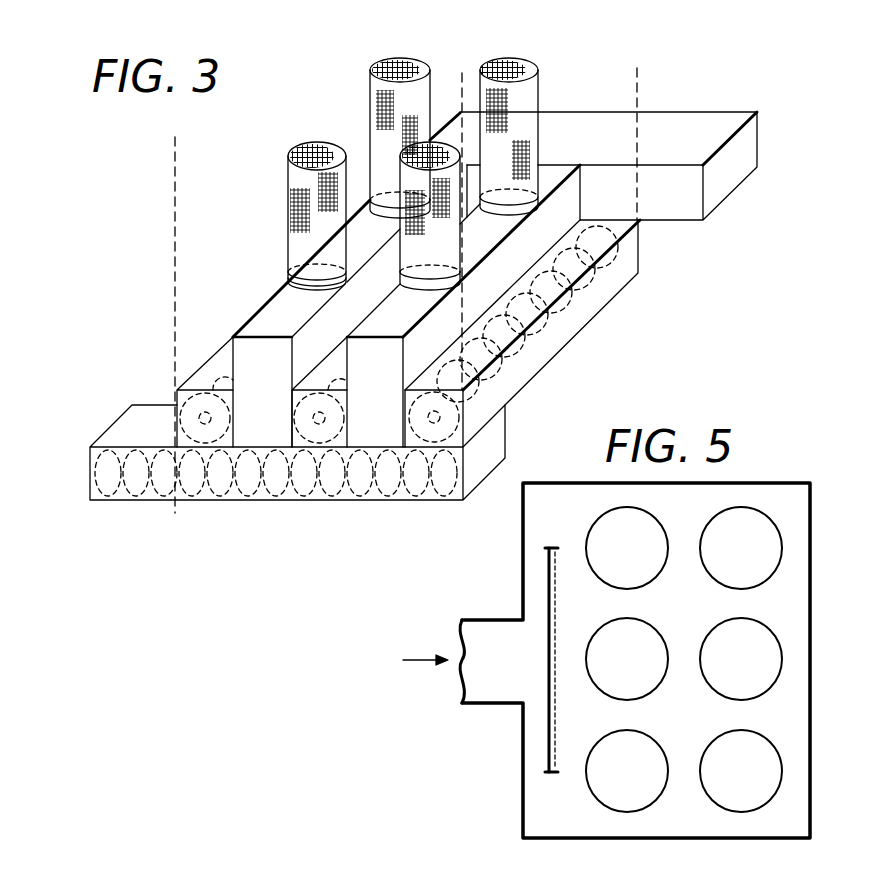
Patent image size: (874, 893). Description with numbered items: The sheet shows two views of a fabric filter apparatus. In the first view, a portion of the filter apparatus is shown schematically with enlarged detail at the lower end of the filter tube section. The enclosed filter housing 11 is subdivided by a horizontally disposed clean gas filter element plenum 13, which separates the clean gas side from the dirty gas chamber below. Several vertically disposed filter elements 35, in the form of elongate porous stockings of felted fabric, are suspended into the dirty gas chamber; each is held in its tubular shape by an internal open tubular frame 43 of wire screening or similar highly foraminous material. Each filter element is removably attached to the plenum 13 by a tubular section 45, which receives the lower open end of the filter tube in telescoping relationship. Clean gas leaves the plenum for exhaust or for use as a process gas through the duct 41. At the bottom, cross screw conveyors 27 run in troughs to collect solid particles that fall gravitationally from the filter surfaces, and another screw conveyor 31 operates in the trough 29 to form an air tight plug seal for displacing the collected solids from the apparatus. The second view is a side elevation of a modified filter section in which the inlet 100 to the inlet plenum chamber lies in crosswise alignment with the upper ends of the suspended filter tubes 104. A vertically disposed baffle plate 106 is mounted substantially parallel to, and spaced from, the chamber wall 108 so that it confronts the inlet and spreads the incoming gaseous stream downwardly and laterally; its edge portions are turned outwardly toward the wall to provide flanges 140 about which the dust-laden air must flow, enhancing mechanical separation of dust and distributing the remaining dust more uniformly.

In FIG. 3, the filter housing 11 is at (643, 84).
In FIG. 3, the clean gas filter element plenum 13 is at (355, 320).
In FIG. 3, the cross screw conveyors 27 is at (178, 403).
In FIG. 3, the trough 29 is at (243, 511).
In FIG. 3, the screw conveyor 31 is at (368, 501).
In FIG. 3, the filter elements 35 is at (287, 217).
In FIG. 3, the duct 41 is at (708, 226).
In FIG. 3, the open tubular frame 43 is at (309, 150).
In FIG. 3, the tubular section 45 is at (292, 283).
In FIG. 5, the inlet 100 is at (528, 672).
In FIG. 5, the filter tubes 104 is at (703, 632).
In FIG. 5, the baffle plate 106 is at (557, 717).
In FIG. 5, the chamber wall 108 is at (523, 789).
In FIG. 5, the flanges 140 is at (549, 548).